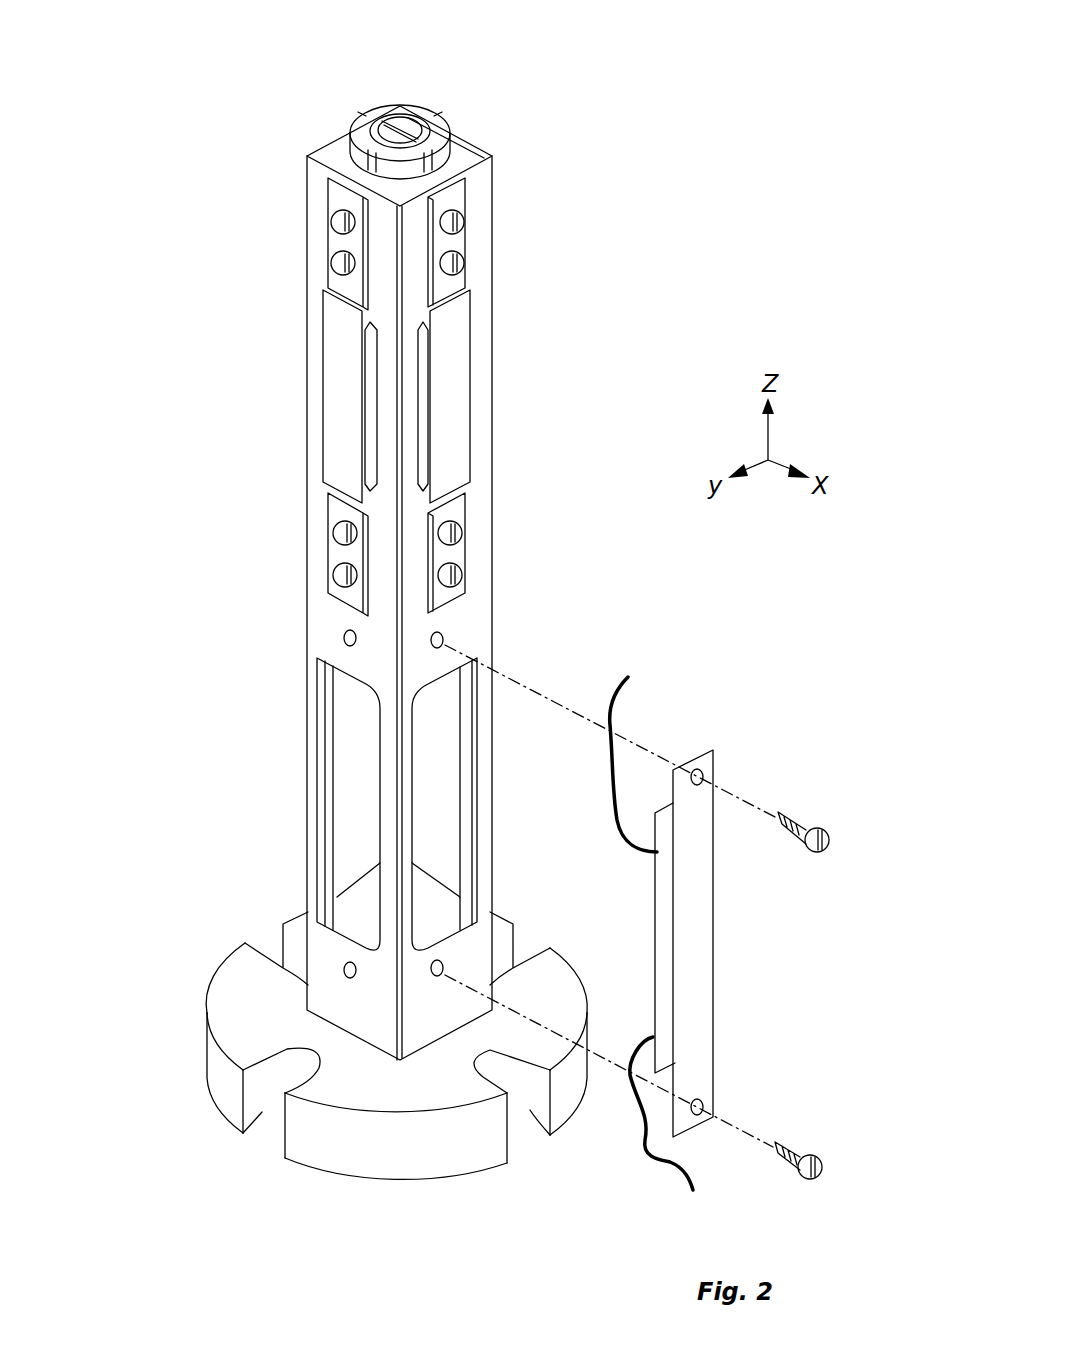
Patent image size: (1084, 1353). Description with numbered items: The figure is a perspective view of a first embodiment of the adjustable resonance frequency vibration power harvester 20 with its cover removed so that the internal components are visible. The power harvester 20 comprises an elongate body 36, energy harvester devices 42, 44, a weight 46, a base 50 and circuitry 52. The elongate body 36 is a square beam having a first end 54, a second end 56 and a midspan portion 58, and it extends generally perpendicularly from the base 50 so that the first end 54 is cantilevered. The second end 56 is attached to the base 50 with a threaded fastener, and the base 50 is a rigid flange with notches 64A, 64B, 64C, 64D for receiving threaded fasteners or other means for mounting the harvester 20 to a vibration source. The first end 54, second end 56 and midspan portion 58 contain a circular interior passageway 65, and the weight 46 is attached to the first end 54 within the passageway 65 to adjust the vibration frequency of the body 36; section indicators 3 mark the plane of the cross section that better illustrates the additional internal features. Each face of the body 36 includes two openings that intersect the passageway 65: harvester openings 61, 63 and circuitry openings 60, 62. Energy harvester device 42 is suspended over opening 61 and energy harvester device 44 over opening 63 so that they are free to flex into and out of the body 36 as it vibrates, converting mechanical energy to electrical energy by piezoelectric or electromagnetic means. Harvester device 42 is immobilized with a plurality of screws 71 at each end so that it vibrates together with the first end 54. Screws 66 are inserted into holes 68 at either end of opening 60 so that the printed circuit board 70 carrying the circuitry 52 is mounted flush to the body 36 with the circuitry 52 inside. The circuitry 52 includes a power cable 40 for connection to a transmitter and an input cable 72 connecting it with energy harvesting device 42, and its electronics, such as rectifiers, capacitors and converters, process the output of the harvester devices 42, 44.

The section line 3- 3 is at (333, 100).
The adjustable resonance frequency vibration power harvester 20 is at (573, 133).
The elongate body 36 is at (515, 530).
The power cable 40 is at (667, 1162).
The energy harvester device 42 is at (457, 358).
The energy harvester device 44 is at (338, 373).
The weight 46 is at (400, 128).
The base 50 is at (235, 995).
The circuitry 52 is at (672, 893).
The first end 54 is at (478, 160).
The second end 56 is at (450, 1043).
The midspan portion 58 is at (322, 617).
The circuitry opening 60 is at (488, 820).
The harvester opening 61 is at (403, 462).
The circuitry opening 62 is at (306, 856).
The harvester opening 63 is at (388, 387).
The notch 64A is at (525, 1105).
The notch 64B is at (503, 946).
The notch 64C is at (290, 945).
The notch 64D is at (255, 1105).
The interior passageway 65 is at (358, 712).
The screws 66 is at (815, 850).
The holes 68 is at (444, 640).
The printed circuit board 70 is at (688, 933).
The screws 71 is at (460, 215).
The input cable 72 is at (613, 805).